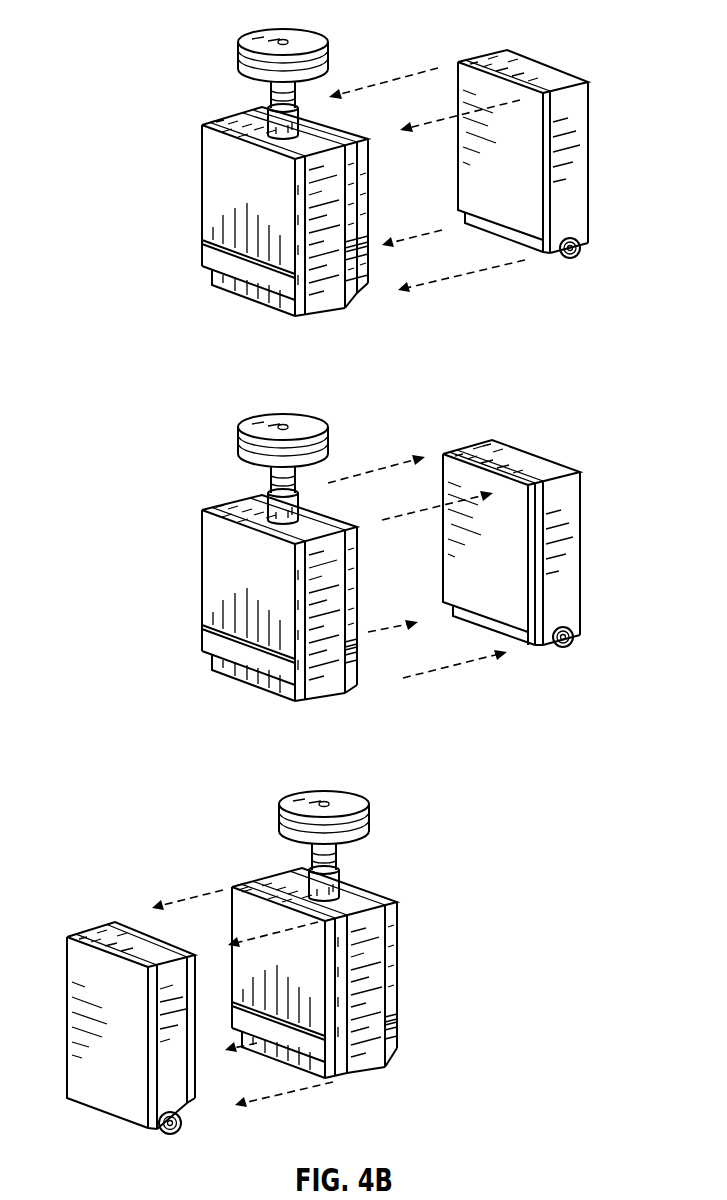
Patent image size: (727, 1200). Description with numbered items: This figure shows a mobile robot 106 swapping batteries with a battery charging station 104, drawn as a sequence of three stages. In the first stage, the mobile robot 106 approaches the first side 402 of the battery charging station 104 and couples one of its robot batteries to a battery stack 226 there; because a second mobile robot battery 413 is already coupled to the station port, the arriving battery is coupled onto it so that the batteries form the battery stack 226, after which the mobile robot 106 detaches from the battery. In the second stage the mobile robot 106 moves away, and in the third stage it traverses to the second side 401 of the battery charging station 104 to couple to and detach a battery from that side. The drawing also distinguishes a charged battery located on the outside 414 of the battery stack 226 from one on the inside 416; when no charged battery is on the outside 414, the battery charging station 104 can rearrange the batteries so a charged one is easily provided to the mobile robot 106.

The battery charging station 104 is at (350, 326).
The mobile robot 106 is at (588, 48).
The battery stack 226 is at (355, 242).
The second side 401 is at (184, 148).
The first side 402 is at (384, 152).
The second mobile robot battery 413 is at (363, 278).
The outside of a battery stack 414 is at (234, 878).
The inside of a battery stack 416 is at (260, 880).